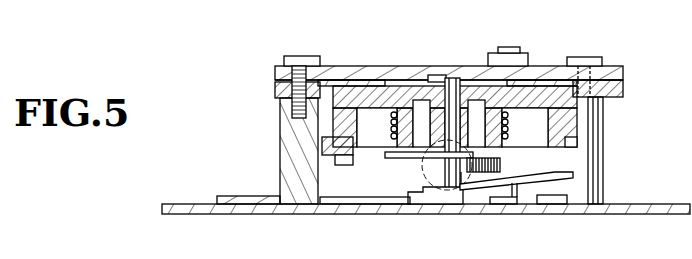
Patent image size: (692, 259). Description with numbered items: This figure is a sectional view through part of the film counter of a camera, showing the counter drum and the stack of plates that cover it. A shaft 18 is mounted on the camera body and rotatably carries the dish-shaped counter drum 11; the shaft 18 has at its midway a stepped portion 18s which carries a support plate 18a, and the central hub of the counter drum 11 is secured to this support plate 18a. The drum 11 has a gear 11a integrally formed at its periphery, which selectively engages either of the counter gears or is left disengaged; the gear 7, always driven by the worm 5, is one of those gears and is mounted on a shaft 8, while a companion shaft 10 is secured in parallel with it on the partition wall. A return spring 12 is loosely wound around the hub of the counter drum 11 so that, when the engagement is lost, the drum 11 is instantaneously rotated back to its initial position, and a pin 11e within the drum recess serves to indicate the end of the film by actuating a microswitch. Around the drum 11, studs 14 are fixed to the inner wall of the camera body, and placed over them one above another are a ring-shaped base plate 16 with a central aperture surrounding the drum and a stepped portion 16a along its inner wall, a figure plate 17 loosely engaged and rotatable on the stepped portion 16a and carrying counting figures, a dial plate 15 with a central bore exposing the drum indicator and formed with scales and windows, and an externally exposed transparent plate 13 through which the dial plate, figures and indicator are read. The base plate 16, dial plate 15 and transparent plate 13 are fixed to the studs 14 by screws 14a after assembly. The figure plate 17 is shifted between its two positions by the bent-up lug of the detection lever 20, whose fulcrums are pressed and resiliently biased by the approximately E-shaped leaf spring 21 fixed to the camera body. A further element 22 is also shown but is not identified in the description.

The worm 5 is at (430, 160).
The gear 7 is at (530, 140).
The shaft 8 is at (505, 54).
The shaft 10 is at (563, 214).
The counter drum 11 is at (447, 80).
The gear 11a is at (578, 147).
The pin 11e is at (335, 160).
The return spring 12 is at (388, 133).
The transparent plate 13 is at (353, 65).
The stud 14 is at (280, 131).
The screw 14a is at (294, 56).
The dial plate 15 is at (276, 79).
The base plate 16 is at (276, 90).
The stepped portion 16a is at (625, 94).
The figure plate 17 is at (375, 83).
The shaft 18 is at (445, 201).
The support plate 18a is at (392, 158).
The stepped portion 18s is at (461, 190).
The detection lever 20 is at (567, 185).
The leaf spring 21 is at (513, 206).
The foot 22 is at (217, 197).